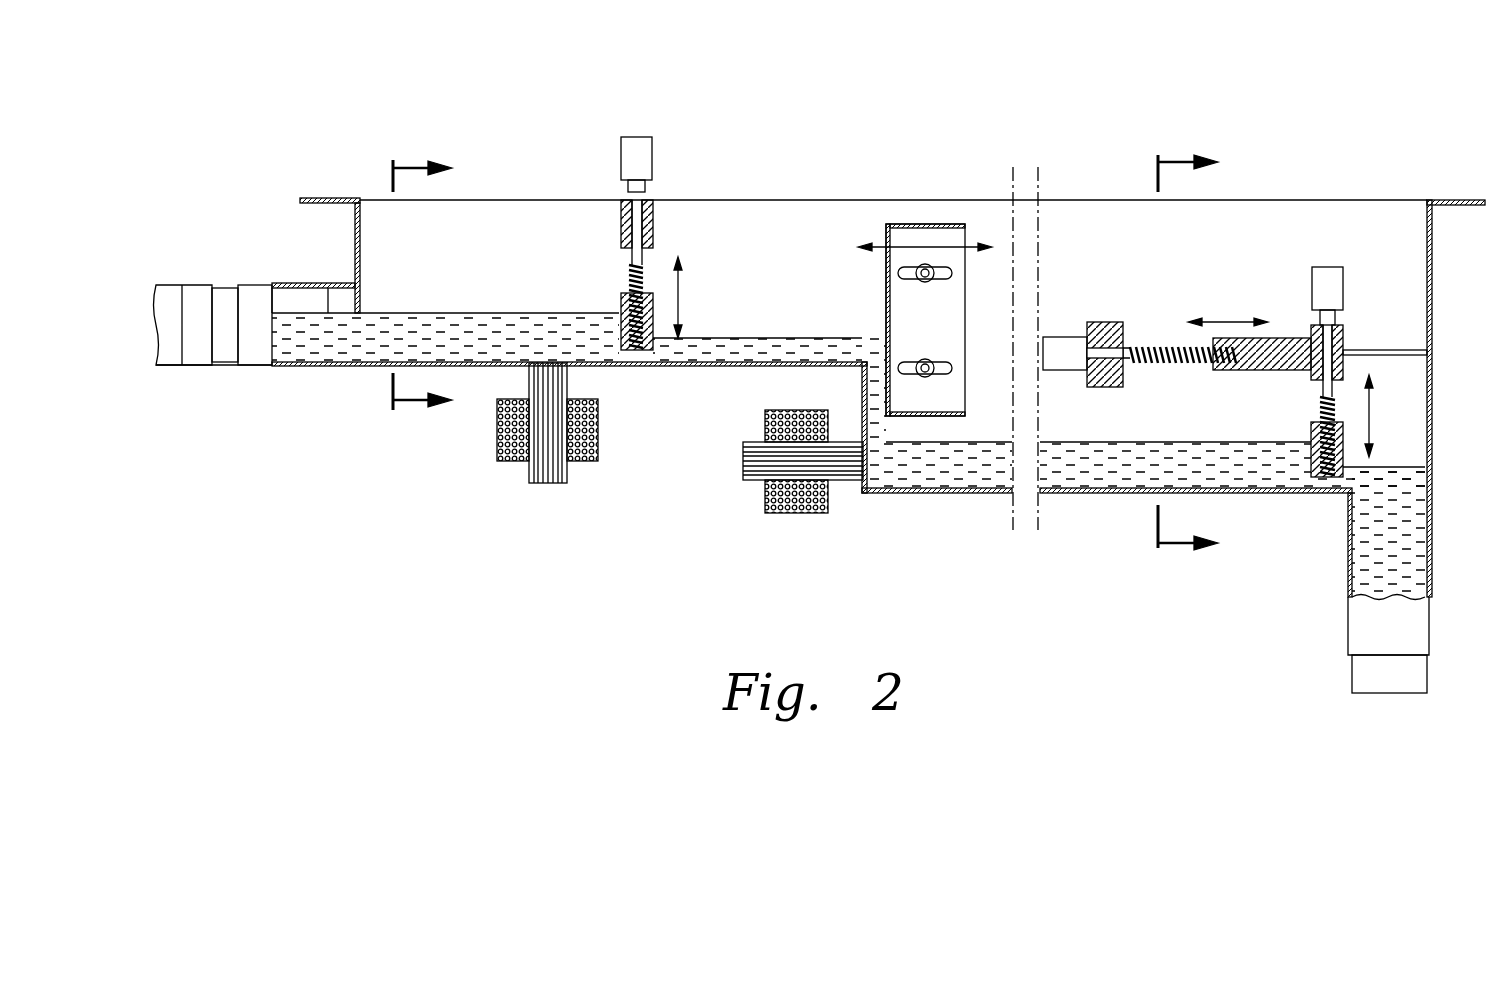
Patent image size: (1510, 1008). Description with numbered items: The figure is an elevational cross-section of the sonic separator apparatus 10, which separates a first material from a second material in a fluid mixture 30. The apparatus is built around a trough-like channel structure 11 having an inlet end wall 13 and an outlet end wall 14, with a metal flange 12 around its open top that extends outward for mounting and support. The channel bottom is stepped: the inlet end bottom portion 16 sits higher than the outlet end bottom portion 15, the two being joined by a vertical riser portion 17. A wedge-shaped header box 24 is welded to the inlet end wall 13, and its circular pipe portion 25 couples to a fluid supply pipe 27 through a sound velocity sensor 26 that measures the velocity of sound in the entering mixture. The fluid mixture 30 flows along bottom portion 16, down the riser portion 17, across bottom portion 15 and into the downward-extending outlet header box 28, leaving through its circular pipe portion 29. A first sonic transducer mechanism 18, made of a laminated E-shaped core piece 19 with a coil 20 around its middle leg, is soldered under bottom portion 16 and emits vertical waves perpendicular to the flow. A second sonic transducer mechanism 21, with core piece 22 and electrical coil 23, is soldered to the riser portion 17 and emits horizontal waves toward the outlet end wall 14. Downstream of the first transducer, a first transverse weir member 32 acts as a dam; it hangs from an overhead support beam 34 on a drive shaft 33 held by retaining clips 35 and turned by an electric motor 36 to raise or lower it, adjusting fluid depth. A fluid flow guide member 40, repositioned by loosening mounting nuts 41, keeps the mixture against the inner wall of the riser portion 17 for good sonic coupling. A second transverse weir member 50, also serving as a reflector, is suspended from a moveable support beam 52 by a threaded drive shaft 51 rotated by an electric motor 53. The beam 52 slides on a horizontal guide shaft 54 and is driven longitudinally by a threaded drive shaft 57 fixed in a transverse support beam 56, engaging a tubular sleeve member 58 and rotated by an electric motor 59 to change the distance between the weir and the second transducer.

The sonic separator apparatus 10 is at (826, 371).
The channel structure 11 is at (815, 200).
The metal flange 12 is at (322, 198).
The inlet end wall 13 is at (355, 230).
The outlet end wall 14 is at (1432, 232).
The outlet end bottom portion 15 is at (1070, 493).
The inlet end bottom portion 16 is at (655, 366).
The vertical riser portion 17 is at (862, 392).
The first sonic transducer mechanism 18 is at (485, 449).
The core piece 19 is at (563, 483).
The coil 20 is at (508, 461).
The second sonic transducer mechanism 21 is at (815, 537).
The core piece 22 is at (743, 470).
The electrical coil 23 is at (772, 513).
The header box 24 is at (270, 285).
The circular pipe portion 25 is at (225, 288).
The sound velocity sensor 26 is at (200, 365).
The fluid supply pipe 27 is at (172, 285).
The outlet header box 28 is at (1348, 548).
The circular pipe portion 29 is at (1352, 678).
The fluid mixture 30 is at (447, 313).
The first transverse weir member 32 is at (621, 300).
The drive shaft 33 is at (630, 273).
The overhead support beam 34 is at (621, 215).
The retaining clips 35 is at (653, 248).
The electric motor 36 is at (628, 137).
The fluid flow guide member 40 is at (928, 224).
The mounting nuts 41 is at (922, 282).
The second transverse weir member 50 is at (1318, 432).
The threaded drive shaft 51 is at (1318, 402).
The moveable support beam 52 is at (1343, 340).
The electric motor 53 is at (1328, 267).
The horizontal guide shaft 54 is at (1397, 355).
The transverse support beam 56 is at (1110, 322).
The threaded drive shaft 57 is at (1170, 345).
The tubular sleeve member 58 is at (1270, 338).
The electric motor 59 is at (1063, 337).